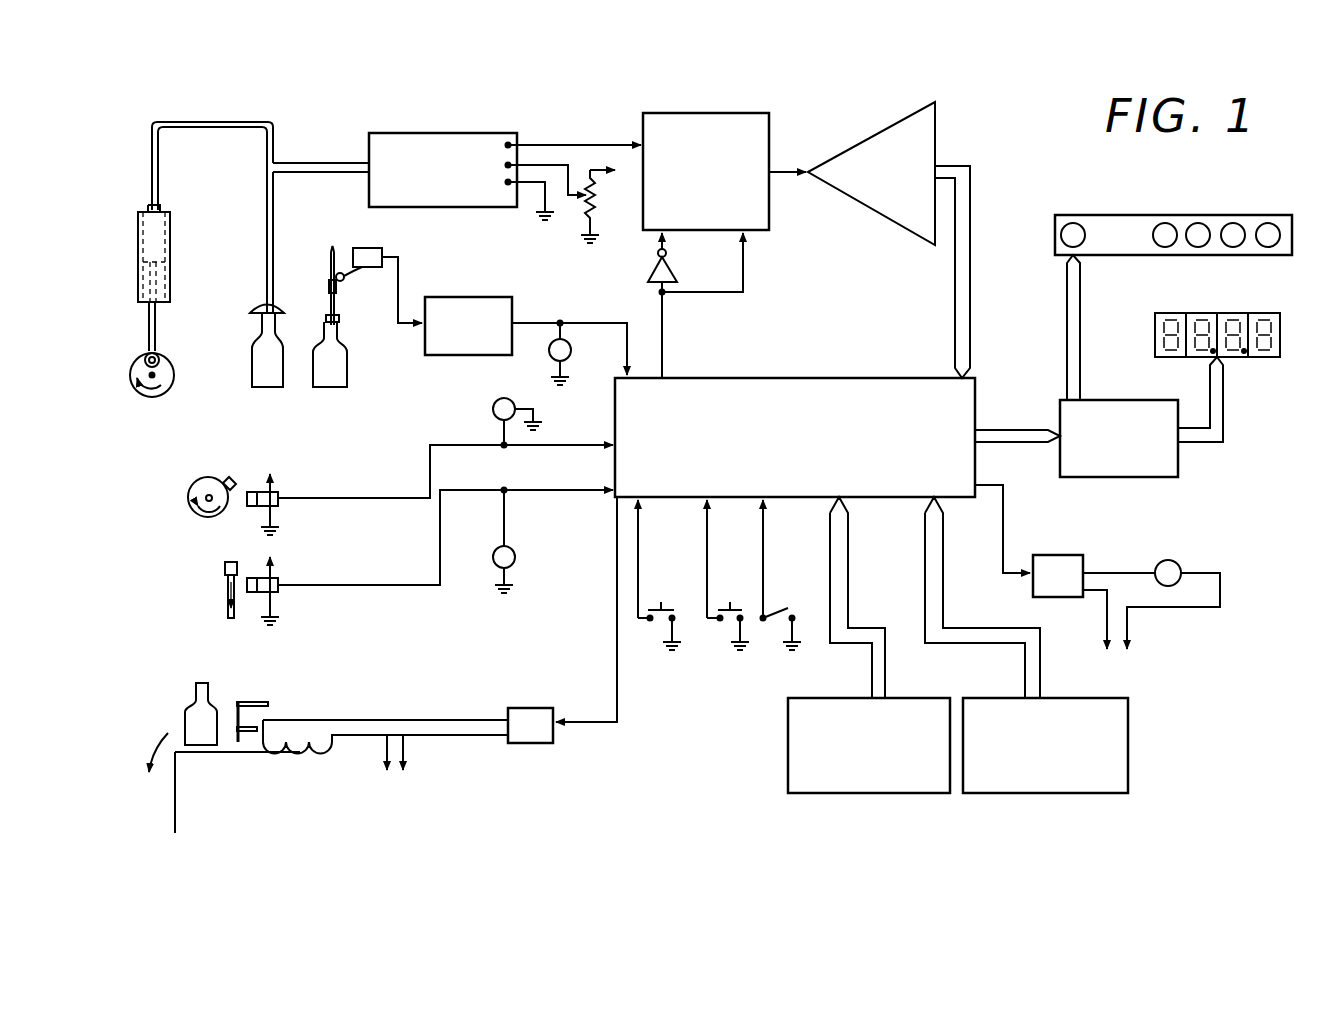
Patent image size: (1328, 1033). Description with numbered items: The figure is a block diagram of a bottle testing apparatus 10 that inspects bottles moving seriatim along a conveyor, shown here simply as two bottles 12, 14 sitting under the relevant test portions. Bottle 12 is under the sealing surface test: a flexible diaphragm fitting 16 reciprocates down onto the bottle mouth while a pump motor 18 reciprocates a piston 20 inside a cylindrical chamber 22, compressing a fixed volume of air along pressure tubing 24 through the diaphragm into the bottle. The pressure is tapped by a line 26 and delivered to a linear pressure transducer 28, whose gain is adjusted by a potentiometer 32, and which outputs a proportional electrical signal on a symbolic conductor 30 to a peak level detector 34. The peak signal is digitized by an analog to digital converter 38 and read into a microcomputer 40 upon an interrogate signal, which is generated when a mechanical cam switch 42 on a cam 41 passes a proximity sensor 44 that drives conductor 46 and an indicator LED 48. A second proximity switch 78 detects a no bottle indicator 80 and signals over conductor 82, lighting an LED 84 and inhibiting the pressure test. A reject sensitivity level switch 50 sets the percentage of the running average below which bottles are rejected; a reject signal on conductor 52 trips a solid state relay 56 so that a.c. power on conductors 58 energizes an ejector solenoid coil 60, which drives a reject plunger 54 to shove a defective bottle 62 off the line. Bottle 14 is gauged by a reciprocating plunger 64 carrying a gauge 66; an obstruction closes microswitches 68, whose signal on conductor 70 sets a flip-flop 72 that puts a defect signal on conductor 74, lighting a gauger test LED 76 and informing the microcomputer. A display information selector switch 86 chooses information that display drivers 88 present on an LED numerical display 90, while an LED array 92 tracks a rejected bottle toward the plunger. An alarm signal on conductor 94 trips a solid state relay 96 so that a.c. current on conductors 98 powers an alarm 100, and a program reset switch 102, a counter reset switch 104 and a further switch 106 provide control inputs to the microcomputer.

The apparatus 10 is at (577, 123).
The bottle 12 is at (252, 370).
The bottle 14 is at (347, 370).
The flexible diaphragm fitting 16 is at (260, 312).
The pump motor 18 is at (170, 380).
The piston 20 is at (165, 273).
The cylindrical chamber 22 is at (162, 217).
The pressure tubing 24 is at (245, 122).
The line 26 is at (342, 163).
The linear pressure transducer 28 is at (435, 133).
The symbolic conductor 30 is at (552, 145).
The potentiometer 32 is at (580, 212).
The peak level detector 34 is at (765, 113).
The analog to digital converter 38 is at (905, 118).
The microcomputer 40 is at (767, 477).
The cam 41 is at (190, 490).
The mechanical cam switch 42 is at (234, 478).
The proximity sensor 44 is at (260, 492).
The symbolic conductor 46 is at (378, 497).
The indicator LED 48 is at (493, 409).
The reject sensitivity level switch 50 is at (840, 793).
The symbolic conductor 52 is at (617, 612).
The reject plunger 54 is at (257, 722).
The solid state relay 56 is at (537, 708).
The conductors 58 is at (404, 745).
The ejector solenoid coil 60 is at (307, 742).
The defective bottle 62 is at (185, 715).
The reciprocating plunger 64 is at (330, 278).
The gauge 66 is at (340, 326).
The microswitches 68 is at (360, 248).
The symbolic conductor 70 is at (399, 270).
The flip-flop 72 is at (448, 297).
The conductor 74 is at (542, 322).
The gauger test LED 76 is at (552, 360).
The second proximity switch 78 is at (258, 578).
The no bottle indicator 80 is at (225, 568).
The symbolic conductor 82 is at (383, 585).
The LED 84 is at (516, 557).
The display information selector switch 86 is at (990, 793).
The display drivers 88 is at (1178, 463).
The LED numerical display 90 is at (1262, 313).
The LED array 92 is at (1147, 215).
The symbolic conductor 94 is at (1005, 510).
The solid state relay 96 is at (1063, 555).
The conductors 98 is at (1127, 620).
The alarm 100 is at (1172, 560).
The program reset switch 102 is at (672, 588).
The counter reset switch 104 is at (742, 588).
The switch 106 is at (778, 611).